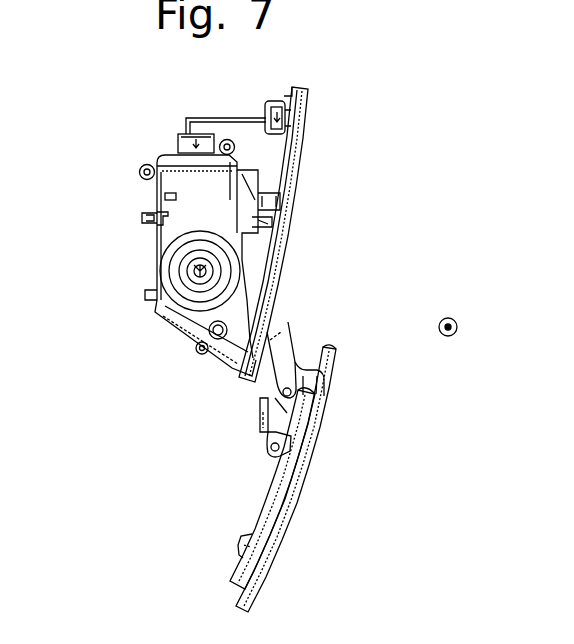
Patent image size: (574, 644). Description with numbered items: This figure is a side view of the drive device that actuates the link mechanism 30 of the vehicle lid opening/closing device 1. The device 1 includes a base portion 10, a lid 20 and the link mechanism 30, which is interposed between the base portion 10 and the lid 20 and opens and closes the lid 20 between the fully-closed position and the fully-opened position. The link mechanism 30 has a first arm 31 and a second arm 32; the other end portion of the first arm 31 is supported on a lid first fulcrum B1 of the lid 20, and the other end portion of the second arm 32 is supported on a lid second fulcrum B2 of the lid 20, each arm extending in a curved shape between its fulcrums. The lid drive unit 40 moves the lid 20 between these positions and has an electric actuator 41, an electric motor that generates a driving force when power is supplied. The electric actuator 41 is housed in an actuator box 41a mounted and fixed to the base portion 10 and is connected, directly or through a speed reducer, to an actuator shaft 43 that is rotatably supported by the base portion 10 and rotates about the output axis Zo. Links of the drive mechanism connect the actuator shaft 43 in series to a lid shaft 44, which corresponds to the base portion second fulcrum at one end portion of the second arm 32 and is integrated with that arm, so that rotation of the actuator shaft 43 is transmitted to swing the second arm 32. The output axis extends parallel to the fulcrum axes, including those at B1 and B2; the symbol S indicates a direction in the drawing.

The lid opening/closing device 1 is at (338, 139).
The base portion 10 is at (285, 179).
The lid 20 is at (323, 402).
The link mechanism 30 is at (330, 334).
The first arm 31 is at (282, 319).
The second arm 32 is at (262, 399).
The lid first fulcrum B1 is at (293, 371).
The lid second fulcrum B2 is at (271, 447).
The lid drive unit 40 is at (158, 153).
The electric actuator 41 is at (152, 248).
The actuator box 41a is at (158, 183).
The actuator shaft 43 is at (190, 270).
The lid shaft 44 is at (215, 331).
The seat width direction indicator S is at (457, 320).